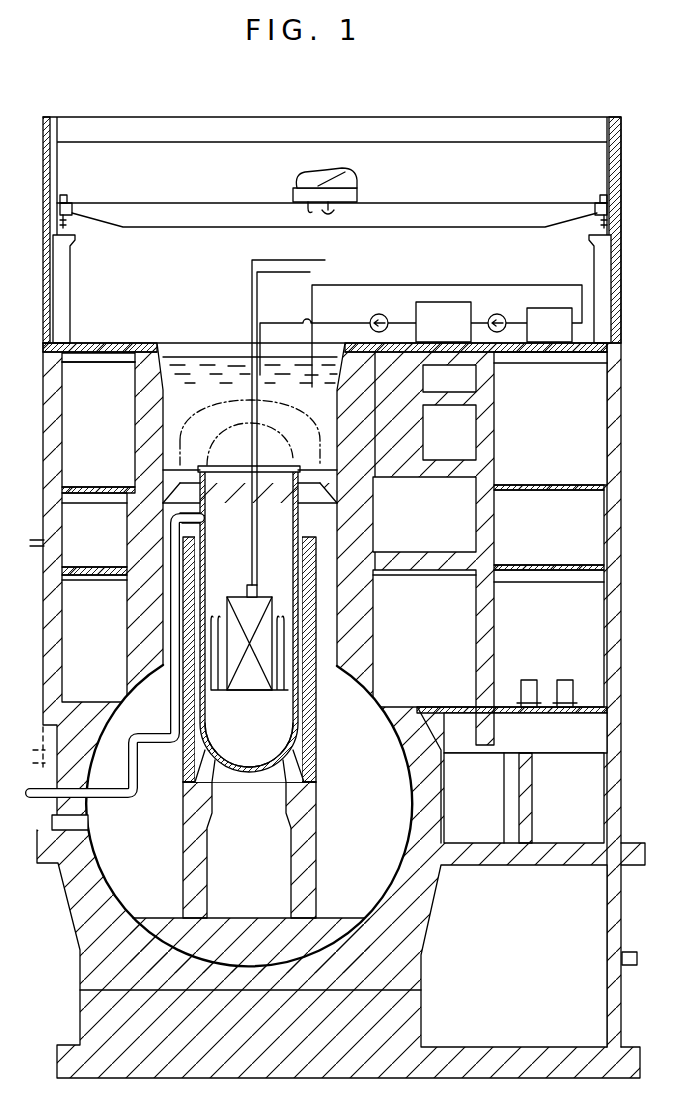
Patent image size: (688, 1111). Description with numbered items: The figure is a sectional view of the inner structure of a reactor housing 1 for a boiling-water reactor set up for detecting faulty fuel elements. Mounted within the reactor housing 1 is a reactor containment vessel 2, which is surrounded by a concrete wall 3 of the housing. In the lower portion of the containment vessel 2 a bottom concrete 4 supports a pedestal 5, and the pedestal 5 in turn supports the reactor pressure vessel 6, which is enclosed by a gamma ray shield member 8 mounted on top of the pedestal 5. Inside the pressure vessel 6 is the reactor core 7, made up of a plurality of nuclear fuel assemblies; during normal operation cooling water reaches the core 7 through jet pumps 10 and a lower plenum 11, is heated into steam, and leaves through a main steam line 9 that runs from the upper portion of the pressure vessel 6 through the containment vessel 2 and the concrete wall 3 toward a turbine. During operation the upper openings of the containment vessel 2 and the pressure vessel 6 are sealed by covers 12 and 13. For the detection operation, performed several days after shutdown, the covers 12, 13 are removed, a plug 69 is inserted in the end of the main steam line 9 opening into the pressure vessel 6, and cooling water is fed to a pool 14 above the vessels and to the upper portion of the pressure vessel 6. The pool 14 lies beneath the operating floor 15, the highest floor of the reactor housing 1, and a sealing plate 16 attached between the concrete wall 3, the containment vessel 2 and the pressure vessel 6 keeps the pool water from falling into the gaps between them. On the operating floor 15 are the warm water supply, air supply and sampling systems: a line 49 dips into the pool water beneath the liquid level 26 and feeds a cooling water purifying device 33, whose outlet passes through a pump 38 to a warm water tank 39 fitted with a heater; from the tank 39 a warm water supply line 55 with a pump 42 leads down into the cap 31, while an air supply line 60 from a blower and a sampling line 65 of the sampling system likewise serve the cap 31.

The reactor housing 1 is at (622, 410).
The reactor containment vessel 2 is at (337, 490).
The concrete wall 3 is at (374, 641).
The bottom concrete 4 is at (147, 917).
The pedestal 5 is at (318, 890).
The reactor pressure vessel 6 is at (299, 716).
The reactor core 7 is at (233, 597).
The gamma ray shield member 8 is at (185, 697).
The main steam line 9 is at (126, 798).
The jet pumps 10 is at (288, 675).
The lower plenum 11 is at (258, 736).
The cover 12 is at (181, 421).
The cover 13 is at (228, 426).
The pool 14 is at (340, 415).
The operating floor 15 is at (112, 343).
The sealing plate 16 is at (186, 480).
The liquid level 26 is at (193, 355).
The cap 31 is at (258, 590).
The cooling water purifying device 33 is at (541, 308).
The pump 38 is at (492, 314).
The warm water tank 39 is at (442, 302).
The pump 42 is at (373, 315).
The line 49 is at (364, 285).
The warm water supply line 55 is at (258, 523).
The air supply line 60 is at (258, 262).
The line 65 is at (254, 307).
The plug 69 is at (204, 516).